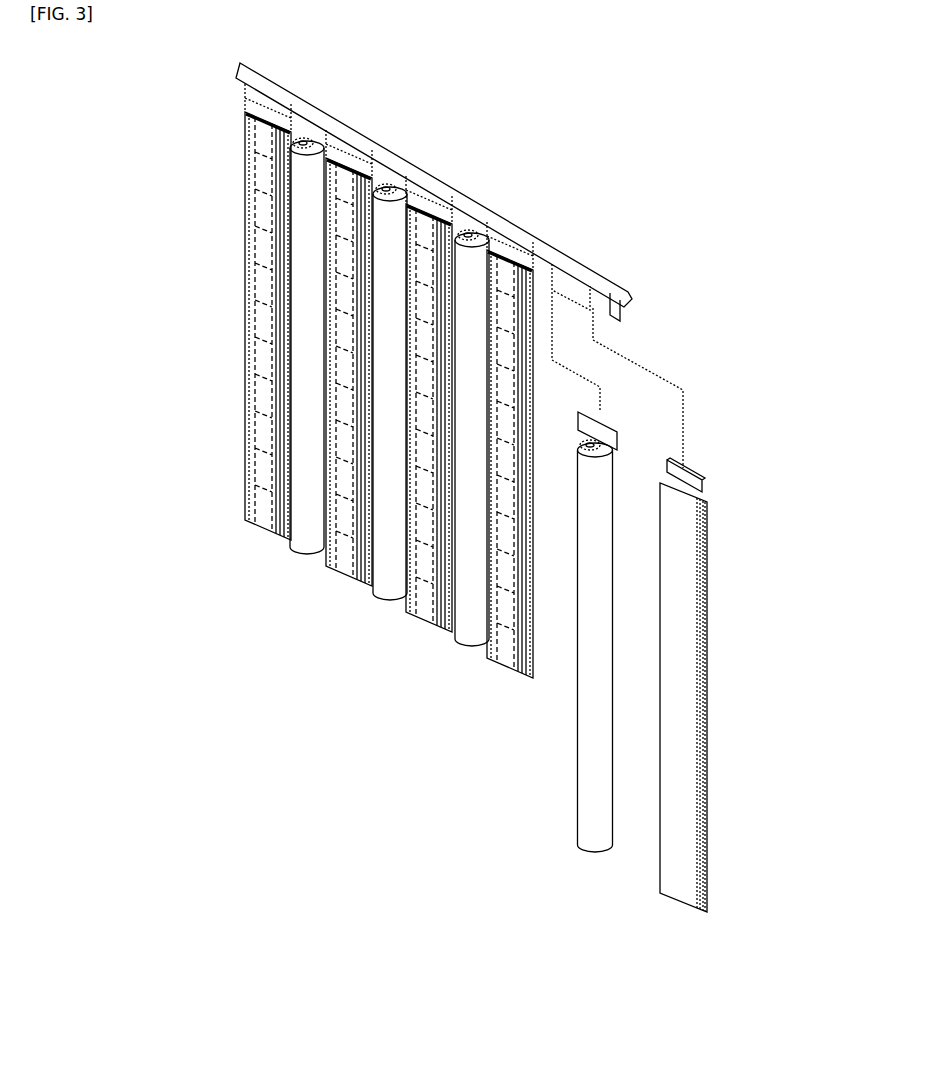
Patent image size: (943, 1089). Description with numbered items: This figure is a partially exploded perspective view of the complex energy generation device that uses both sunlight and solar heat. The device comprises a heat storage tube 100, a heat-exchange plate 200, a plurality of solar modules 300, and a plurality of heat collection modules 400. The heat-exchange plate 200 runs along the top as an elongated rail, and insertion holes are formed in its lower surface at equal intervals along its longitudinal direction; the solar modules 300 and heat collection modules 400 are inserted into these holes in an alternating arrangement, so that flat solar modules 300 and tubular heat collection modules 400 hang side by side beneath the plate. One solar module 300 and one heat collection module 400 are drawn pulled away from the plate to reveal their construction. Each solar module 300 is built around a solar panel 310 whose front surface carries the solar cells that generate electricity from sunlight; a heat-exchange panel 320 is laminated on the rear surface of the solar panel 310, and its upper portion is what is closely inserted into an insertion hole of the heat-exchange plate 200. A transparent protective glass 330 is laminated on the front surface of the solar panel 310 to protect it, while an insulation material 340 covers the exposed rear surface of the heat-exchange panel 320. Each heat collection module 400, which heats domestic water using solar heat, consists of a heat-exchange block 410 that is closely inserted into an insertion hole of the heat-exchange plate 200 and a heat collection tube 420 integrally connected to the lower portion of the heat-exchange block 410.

The heat storage tube 100 is at (342, 121).
The heat-exchange plate 200 is at (240, 97).
The solar module 300 is at (507, 561).
The solar panel 310 is at (753, 704).
The heat-exchange panel 320 is at (738, 465).
The transparent protective glass 330 is at (735, 697).
The insulation material 340 is at (756, 706).
The heat collection module 400 is at (461, 548).
The heat-exchange block 410 is at (549, 646).
The heat collection tube 420 is at (629, 388).